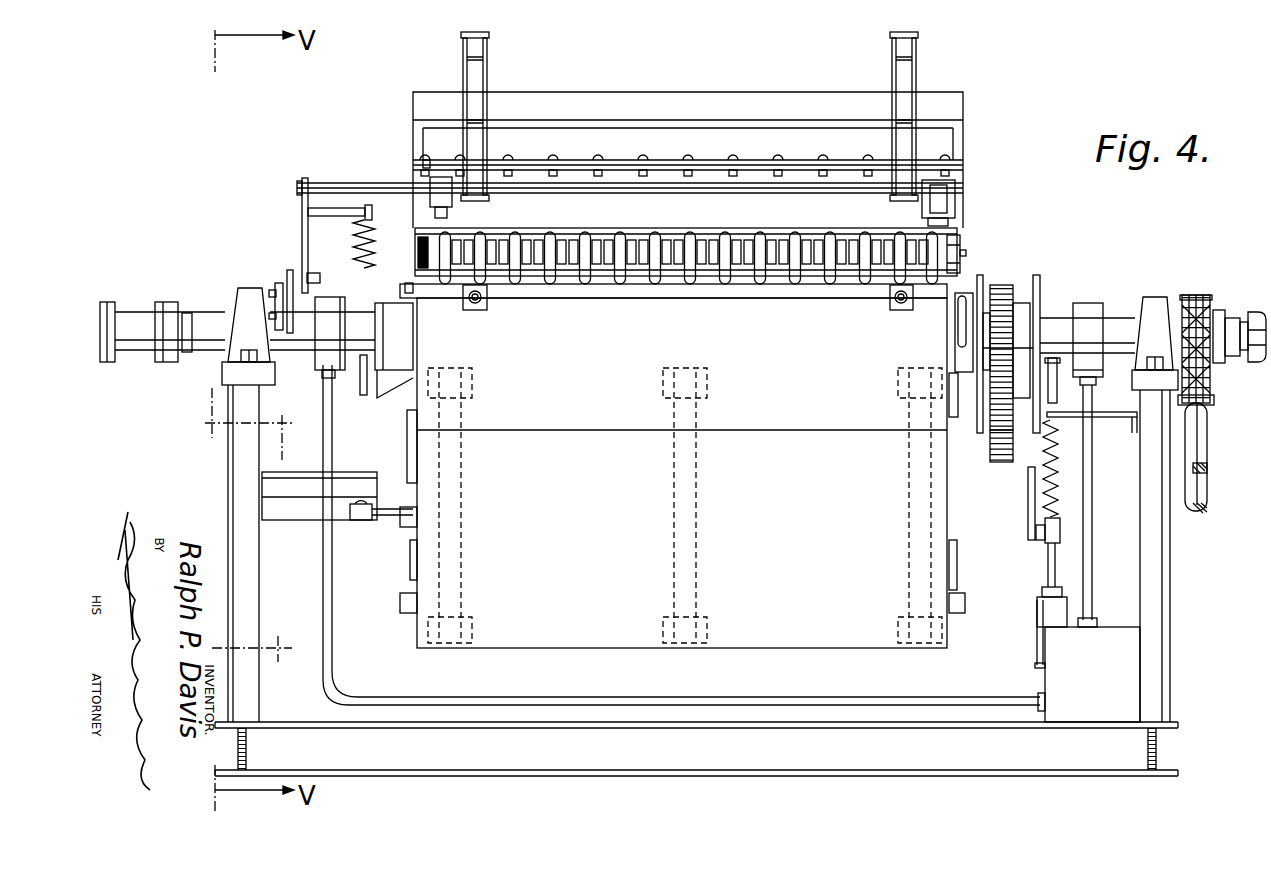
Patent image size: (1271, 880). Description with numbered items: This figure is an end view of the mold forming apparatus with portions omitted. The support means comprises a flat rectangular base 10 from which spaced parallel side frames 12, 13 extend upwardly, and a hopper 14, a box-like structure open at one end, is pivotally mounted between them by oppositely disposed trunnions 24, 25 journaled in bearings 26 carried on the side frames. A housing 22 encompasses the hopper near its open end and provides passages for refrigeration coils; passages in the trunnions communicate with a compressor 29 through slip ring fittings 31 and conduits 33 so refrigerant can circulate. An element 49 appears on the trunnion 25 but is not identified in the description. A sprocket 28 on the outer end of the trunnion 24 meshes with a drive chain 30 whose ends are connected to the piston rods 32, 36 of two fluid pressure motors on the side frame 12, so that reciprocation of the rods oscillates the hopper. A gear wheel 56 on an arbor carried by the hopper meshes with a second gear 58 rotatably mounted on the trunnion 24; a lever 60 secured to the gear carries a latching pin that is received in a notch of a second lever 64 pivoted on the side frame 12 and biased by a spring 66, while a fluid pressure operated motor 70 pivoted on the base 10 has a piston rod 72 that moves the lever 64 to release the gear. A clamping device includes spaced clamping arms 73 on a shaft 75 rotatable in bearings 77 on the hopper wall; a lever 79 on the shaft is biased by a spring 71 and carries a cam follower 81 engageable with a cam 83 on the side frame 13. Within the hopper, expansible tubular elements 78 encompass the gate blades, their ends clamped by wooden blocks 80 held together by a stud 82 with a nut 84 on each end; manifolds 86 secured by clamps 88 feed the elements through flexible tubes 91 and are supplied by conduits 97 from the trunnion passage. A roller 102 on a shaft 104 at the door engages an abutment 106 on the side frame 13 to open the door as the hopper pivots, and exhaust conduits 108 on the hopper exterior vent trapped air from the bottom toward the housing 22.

The base 10 is at (572, 760).
The side frame 12 is at (1153, 603).
The side frame 13 is at (256, 598).
The hopper 14 is at (553, 633).
The housing 22 is at (572, 105).
The trunnion 24 is at (1113, 320).
The trunnion 25 is at (203, 327).
The bearings 26 is at (253, 295).
The sprocket 28 is at (1215, 315).
The compressor 29 is at (1063, 647).
The drive chain 30 is at (1195, 297).
The slip ring fittings 31 is at (330, 303).
The piston rod 32 is at (1203, 497).
The conduits 33 is at (340, 690).
The piston rod 36 is at (1195, 467).
The hub 49 is at (170, 350).
The gear wheel 56 is at (1002, 457).
The second gear 58 is at (1002, 287).
The lever 60 is at (1028, 485).
The second lever 64 is at (1040, 538).
The spring 66 is at (1060, 455).
The fluid pressure operated motor 70 is at (1045, 612).
The spring 71 is at (369, 229).
The piston rod 72 is at (1048, 565).
The clamping arms 73 is at (490, 52).
The shaft 75 is at (370, 187).
The bearings 77 is at (455, 212).
The expansible tubular element 78 is at (592, 268).
The lever 79 is at (304, 177).
The wooden blocks 80 is at (677, 263).
The cam follower 81 is at (279, 283).
The stud 82 is at (405, 290).
The cam 83 is at (290, 270).
The nut 84 is at (376, 245).
The manifolds 86 is at (535, 298).
The clamps 88 is at (472, 310).
The flexible tubes 91 is at (585, 232).
The conduits 97 is at (947, 340).
The roller 102 is at (365, 508).
The shaft 104 is at (402, 517).
The abutment 106 is at (355, 470).
The conduits 108 is at (460, 492).